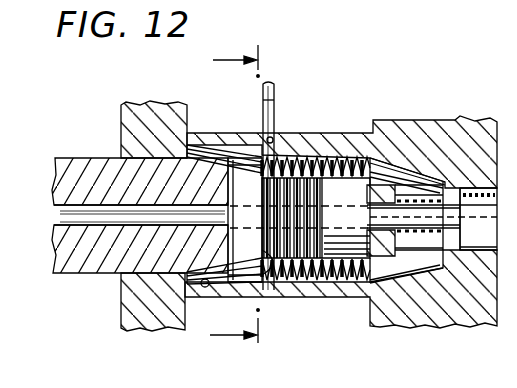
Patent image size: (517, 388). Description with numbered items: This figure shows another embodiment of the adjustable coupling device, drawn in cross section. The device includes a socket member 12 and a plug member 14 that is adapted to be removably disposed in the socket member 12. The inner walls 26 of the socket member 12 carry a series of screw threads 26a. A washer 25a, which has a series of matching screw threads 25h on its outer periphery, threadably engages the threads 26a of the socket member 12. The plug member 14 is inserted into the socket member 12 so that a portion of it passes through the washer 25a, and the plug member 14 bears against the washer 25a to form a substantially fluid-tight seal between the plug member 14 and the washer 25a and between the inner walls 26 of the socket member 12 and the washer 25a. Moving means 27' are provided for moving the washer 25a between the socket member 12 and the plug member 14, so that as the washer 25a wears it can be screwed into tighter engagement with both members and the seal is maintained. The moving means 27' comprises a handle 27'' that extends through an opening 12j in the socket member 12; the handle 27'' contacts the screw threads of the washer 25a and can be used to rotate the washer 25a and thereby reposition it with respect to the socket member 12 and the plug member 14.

The socket member 12 is at (447, 120).
The opening 12j is at (273, 138).
The plug member 14 is at (88, 158).
The washer 25a is at (300, 205).
The screw threads 25h is at (263, 220).
The inner walls 26 is at (205, 287).
The screw threads 26a is at (344, 165).
The moving means 27' is at (304, 183).
The handle 27'' is at (236, 107).